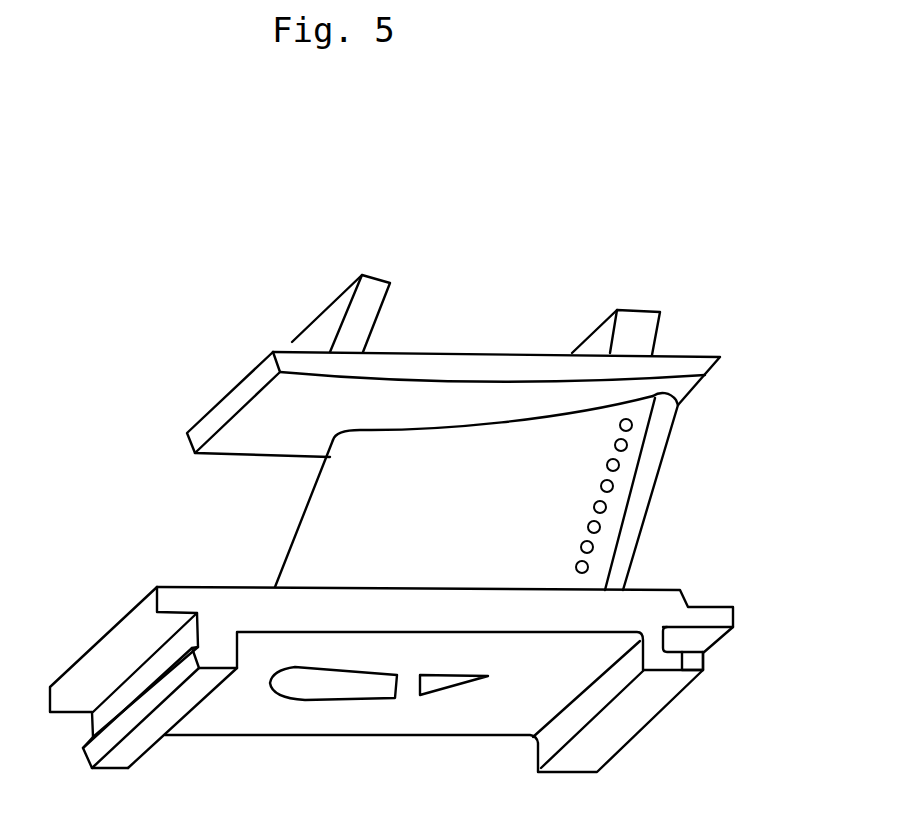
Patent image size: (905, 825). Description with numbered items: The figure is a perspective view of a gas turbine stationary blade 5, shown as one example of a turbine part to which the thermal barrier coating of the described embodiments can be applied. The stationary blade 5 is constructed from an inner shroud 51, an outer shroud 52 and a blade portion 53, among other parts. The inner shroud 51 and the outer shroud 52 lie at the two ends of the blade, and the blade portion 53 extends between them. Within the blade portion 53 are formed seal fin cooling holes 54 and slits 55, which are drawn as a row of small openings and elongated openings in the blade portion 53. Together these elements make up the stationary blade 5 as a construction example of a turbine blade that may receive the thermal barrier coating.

The gas turbine stationary blade 5 is at (451, 280).
The inner shroud 51 is at (507, 367).
The outer shroud 52 is at (663, 612).
The blade portion 53 is at (558, 513).
The seal fin cooling holes 54 is at (613, 463).
The slits 55 is at (635, 555).